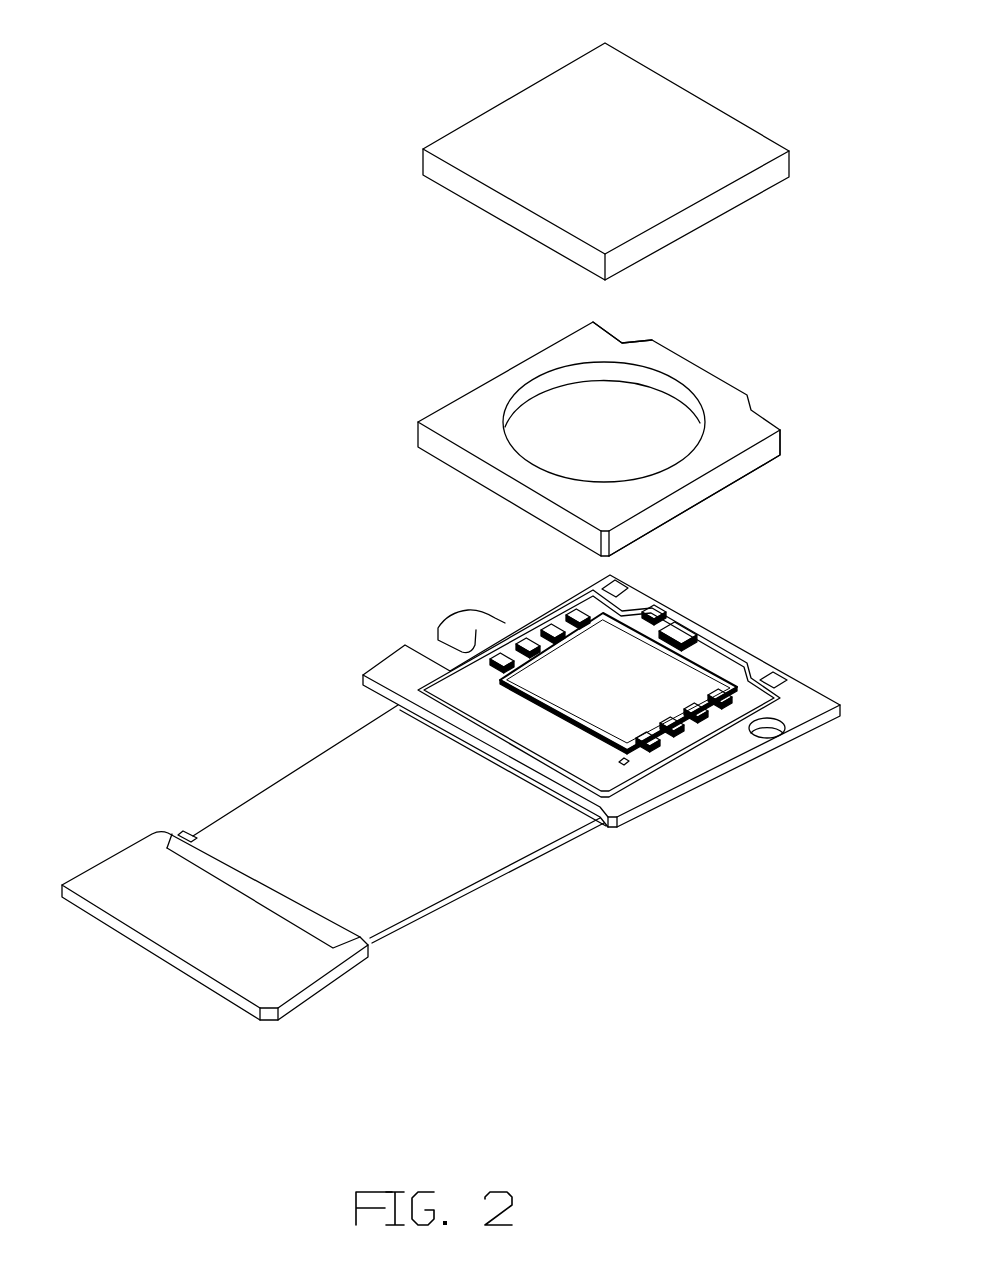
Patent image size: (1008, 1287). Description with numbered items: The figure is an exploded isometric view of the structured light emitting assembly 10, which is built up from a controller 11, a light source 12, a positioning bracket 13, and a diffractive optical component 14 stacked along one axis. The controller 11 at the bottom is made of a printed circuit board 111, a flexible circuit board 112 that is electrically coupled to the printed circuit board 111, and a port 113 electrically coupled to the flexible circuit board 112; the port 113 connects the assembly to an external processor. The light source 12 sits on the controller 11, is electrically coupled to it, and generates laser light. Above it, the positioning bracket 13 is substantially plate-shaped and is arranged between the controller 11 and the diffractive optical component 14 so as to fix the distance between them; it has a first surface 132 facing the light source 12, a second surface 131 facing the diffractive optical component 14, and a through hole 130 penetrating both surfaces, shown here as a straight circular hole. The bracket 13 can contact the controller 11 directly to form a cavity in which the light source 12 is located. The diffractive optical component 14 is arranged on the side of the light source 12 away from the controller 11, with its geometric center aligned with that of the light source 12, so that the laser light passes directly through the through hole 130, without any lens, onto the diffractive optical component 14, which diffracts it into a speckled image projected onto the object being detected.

The structured light emitting assembly 10 is at (322, 60).
The controller 11 is at (451, 797).
The printed circuit board 111 is at (637, 790).
The flexible circuit board 112 is at (525, 830).
The port 113 is at (323, 960).
The light source 12 is at (700, 682).
The positioning bracket 13 is at (636, 430).
The through hole 130 is at (652, 398).
The second surface 131 is at (622, 345).
The first surface 132 is at (722, 495).
The diffractive optical component 14 is at (725, 137).